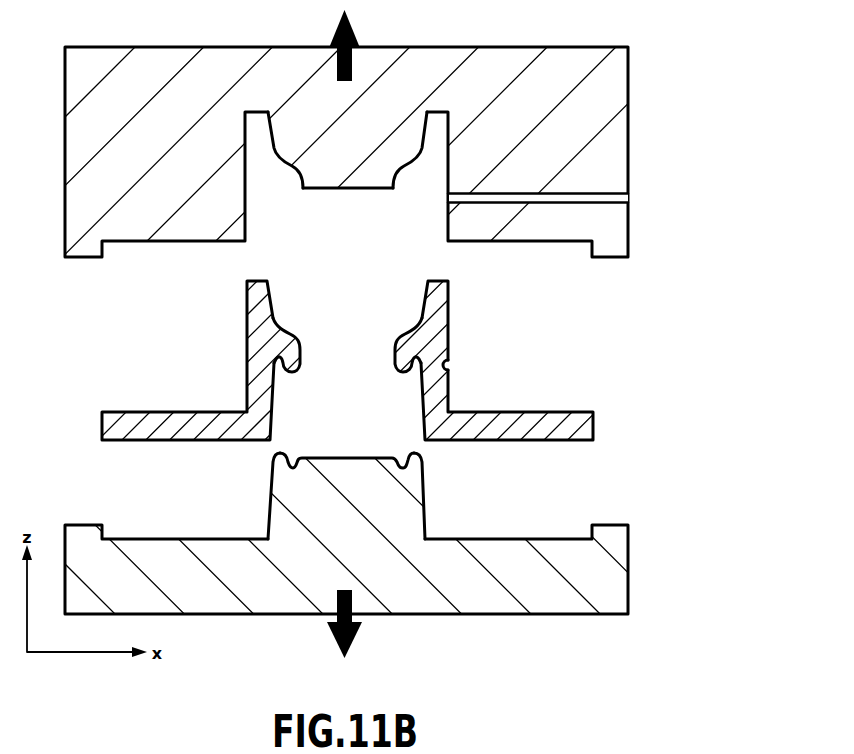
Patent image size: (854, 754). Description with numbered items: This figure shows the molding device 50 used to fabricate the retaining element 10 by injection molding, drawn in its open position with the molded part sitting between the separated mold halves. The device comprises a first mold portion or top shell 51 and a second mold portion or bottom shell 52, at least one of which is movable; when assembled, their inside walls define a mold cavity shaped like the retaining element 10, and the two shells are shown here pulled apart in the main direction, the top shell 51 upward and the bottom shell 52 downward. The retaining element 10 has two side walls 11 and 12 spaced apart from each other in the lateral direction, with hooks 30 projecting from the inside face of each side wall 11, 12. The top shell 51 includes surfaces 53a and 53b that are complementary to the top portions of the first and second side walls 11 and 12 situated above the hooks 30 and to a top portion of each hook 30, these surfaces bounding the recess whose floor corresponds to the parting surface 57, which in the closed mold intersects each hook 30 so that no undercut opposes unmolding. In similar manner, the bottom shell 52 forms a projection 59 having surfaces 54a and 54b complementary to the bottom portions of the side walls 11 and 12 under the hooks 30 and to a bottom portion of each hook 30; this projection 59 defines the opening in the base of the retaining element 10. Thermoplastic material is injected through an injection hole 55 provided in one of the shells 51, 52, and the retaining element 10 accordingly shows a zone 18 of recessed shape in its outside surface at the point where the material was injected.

The retaining element 10 is at (407, 440).
The first side wall 11 is at (304, 440).
The second side wall 12 is at (449, 440).
The zone of recessed shape 18 is at (451, 368).
The hook 30 is at (301, 343).
The molding device 50 is at (427, 223).
The top shell 51 is at (496, 75).
The bottom shell 52 is at (427, 534).
The surface of top shell 53a is at (288, 167).
The surface of top shell 53b is at (401, 170).
The surface of projection 54a is at (262, 491).
The surface of projection 54b is at (433, 491).
The injection hole 55 is at (550, 200).
The parting surface 57 is at (336, 188).
The projection 59 is at (350, 477).